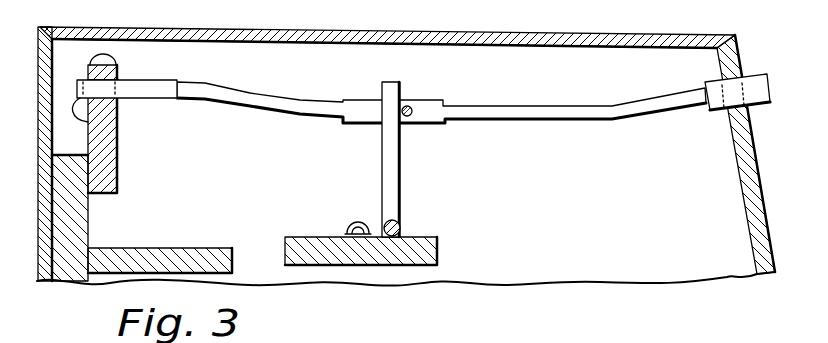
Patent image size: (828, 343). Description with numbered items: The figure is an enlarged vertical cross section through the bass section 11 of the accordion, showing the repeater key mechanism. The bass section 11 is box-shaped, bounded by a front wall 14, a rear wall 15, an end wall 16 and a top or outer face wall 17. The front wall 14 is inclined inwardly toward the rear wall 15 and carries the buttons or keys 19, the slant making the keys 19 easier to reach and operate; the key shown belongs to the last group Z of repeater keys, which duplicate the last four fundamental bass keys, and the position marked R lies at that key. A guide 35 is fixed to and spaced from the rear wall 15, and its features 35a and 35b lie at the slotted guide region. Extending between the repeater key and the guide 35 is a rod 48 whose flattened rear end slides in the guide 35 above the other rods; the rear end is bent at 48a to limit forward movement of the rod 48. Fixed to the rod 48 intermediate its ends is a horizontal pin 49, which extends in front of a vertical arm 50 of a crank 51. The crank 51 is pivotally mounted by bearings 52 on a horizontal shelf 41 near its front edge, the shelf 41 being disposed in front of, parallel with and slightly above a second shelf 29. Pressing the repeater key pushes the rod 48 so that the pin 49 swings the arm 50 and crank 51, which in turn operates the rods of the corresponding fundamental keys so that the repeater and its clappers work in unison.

The bass section 11 is at (414, 144).
The front wall 14 is at (748, 193).
The rear wall 15 is at (45, 138).
The end wall 16 is at (530, 262).
The top or outer face wall 17 is at (432, 40).
The buttons or keys 19 is at (752, 70).
The guide block position R is at (768, 79).
The repeater key group Z is at (766, 108).
The shelf 29 is at (195, 260).
The guide 35 is at (119, 121).
The pivot pin 35a is at (152, 99).
The post cap 35b is at (118, 73).
The shelf 41 is at (435, 238).
The rod 48 is at (389, 110).
The bent rear end of rod 48a is at (118, 130).
The pin 49 is at (412, 106).
The vertical arm 50 is at (382, 162).
The crank 51 is at (400, 222).
The bearings 52 is at (375, 226).